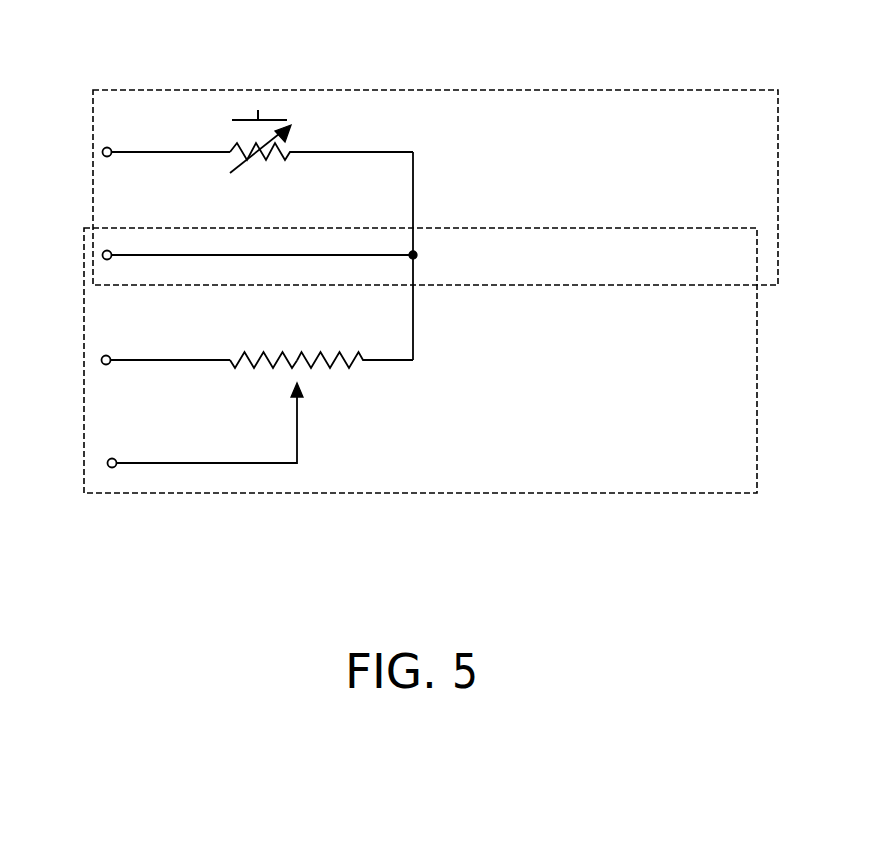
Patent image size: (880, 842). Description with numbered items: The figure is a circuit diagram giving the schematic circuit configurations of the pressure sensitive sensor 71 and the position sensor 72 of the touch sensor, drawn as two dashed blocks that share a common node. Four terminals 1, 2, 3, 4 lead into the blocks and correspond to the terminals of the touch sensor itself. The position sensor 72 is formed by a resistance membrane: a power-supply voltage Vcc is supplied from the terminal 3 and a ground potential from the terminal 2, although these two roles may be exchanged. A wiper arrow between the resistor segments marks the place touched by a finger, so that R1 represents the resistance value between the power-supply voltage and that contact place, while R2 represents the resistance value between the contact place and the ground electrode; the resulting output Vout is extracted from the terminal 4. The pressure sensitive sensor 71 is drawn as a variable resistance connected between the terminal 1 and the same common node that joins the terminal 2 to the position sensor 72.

The pressure sensitive sensor 71 is at (410, 187).
The position sensor (resistance membrane) 72 is at (399, 400).
The resistance value between power-supply voltage and contact place R1 is at (263, 377).
The resistance value between contact place and ground electrode R2 is at (355, 377).
The terminal 1 is at (136, 153).
The terminal 2 is at (227, 256).
The terminal 3 is at (136, 361).
The terminal 4 is at (172, 431).